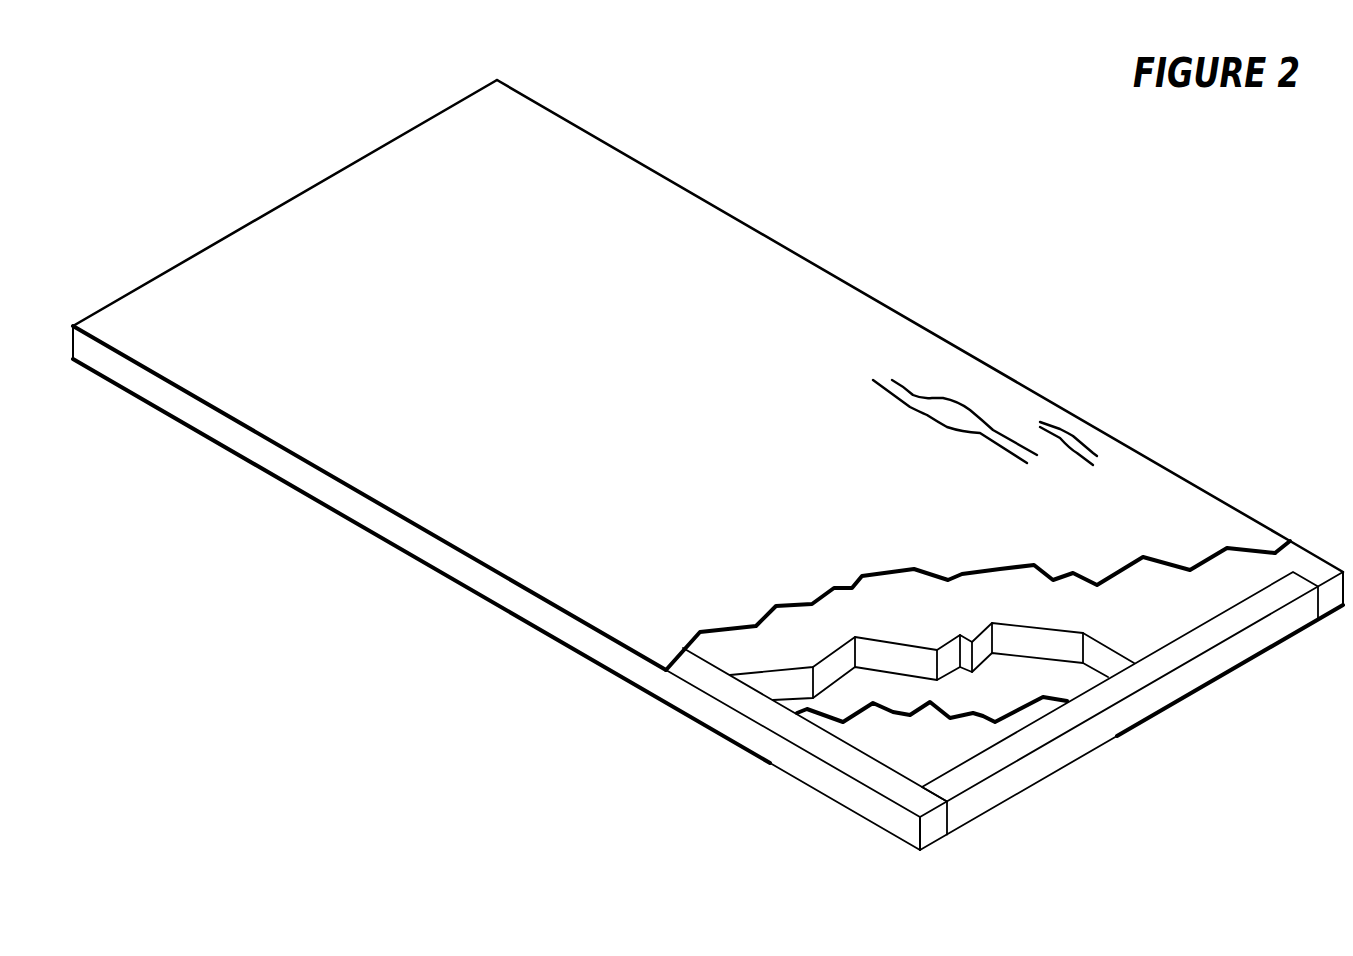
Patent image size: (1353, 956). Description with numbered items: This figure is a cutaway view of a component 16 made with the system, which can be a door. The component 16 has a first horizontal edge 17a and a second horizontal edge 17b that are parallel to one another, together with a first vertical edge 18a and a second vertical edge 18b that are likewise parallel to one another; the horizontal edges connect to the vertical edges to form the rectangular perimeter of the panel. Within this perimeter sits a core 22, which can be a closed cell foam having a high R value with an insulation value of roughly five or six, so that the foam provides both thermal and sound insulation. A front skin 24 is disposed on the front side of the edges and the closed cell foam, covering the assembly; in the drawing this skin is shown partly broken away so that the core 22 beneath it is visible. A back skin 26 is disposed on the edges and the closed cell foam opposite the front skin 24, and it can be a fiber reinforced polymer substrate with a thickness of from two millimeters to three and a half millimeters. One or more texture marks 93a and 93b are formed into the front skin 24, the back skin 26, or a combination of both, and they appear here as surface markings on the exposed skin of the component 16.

The component 16 is at (815, 129).
The first horizontal edge 17a is at (300, 194).
The second horizontal edge 17b is at (1167, 693).
The first vertical edge 18a is at (378, 522).
The second vertical edge 18b is at (903, 316).
The core 22 is at (899, 644).
The front skin 24 is at (890, 571).
The back skin 26 is at (984, 714).
The texture mark 93a is at (942, 398).
The texture mark 93b is at (1063, 430).